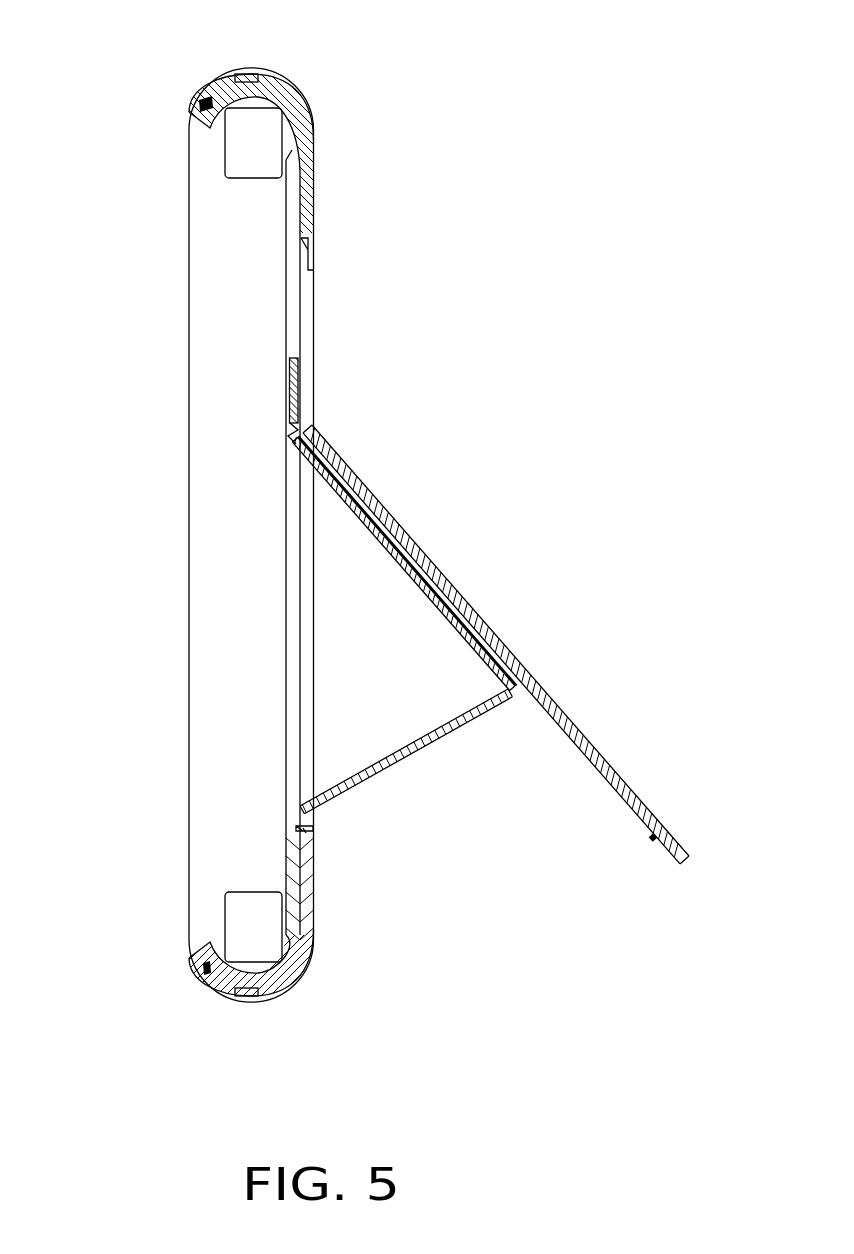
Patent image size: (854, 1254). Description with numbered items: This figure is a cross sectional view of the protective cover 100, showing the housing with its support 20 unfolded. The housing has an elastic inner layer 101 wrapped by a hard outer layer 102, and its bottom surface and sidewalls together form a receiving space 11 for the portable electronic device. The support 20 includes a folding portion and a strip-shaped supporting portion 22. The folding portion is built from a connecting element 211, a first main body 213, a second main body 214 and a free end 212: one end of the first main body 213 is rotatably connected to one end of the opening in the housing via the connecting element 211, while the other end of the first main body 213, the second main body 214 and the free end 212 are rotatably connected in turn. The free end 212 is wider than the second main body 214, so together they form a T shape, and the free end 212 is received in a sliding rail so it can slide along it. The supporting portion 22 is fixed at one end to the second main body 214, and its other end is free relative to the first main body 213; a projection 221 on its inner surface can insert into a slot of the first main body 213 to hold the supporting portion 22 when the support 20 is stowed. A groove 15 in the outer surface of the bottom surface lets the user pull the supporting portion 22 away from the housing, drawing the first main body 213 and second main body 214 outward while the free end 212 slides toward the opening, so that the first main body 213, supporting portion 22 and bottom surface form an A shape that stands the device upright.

The protective cover 100 is at (198, 42).
The inner layer 101 is at (268, 84).
The outer layer 102 is at (303, 119).
The receiving space 11 is at (262, 212).
The groove 15 is at (305, 830).
The support 20 is at (512, 603).
The free end 212 is at (297, 386).
The supporting portion 22 is at (420, 558).
The second main body 214 is at (370, 503).
The first main body 213 is at (395, 765).
The connecting element 211 is at (305, 829).
The projection 221 is at (648, 840).